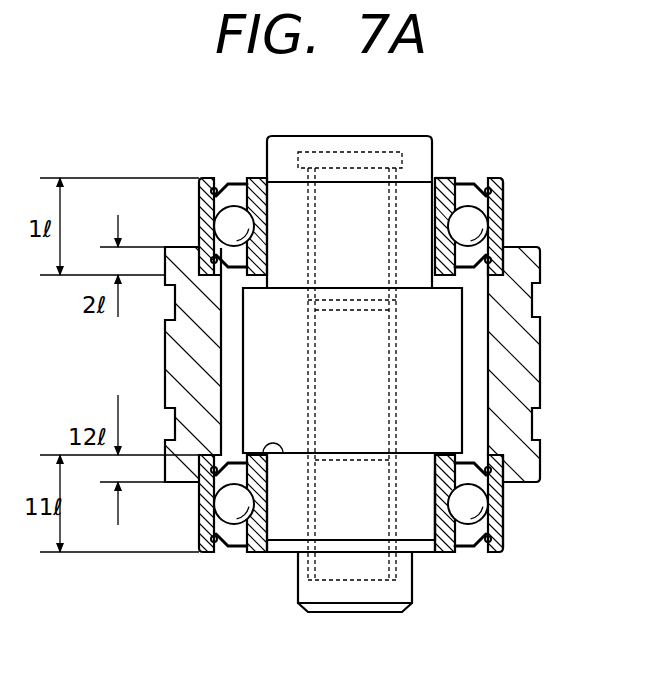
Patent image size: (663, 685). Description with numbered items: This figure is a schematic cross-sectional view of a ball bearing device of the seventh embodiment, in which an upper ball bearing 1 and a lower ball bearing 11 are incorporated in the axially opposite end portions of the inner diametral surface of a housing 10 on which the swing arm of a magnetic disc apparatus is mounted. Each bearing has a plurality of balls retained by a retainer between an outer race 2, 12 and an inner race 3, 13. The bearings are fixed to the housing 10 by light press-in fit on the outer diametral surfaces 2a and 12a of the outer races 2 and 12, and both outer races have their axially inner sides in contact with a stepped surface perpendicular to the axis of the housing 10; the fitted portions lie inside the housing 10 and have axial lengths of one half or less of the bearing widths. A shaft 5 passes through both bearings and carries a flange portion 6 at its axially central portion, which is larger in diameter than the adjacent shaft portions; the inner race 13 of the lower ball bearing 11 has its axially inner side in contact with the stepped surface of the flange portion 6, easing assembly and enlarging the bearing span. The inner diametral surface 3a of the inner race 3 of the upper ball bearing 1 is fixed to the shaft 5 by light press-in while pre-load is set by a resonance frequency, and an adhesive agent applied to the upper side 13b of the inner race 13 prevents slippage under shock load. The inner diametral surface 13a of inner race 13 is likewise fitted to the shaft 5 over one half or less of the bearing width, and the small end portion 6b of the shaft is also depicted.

The upper ball bearing 1 is at (391, 180).
The outer race 2 is at (395, 216).
The outer diametral surface 2a is at (505, 223).
The inner race 3 is at (376, 180).
The inner diametral surface 3a is at (447, 178).
The shaft 5 is at (433, 198).
The flange portion 6 is at (411, 360).
The small-diameter end portion of shaft 6b is at (413, 453).
The housing 10 is at (527, 271).
The lower ball bearing 11 is at (391, 536).
The outer race 12 is at (402, 503).
The outer diametral surface 12a is at (507, 505).
The inner race 13 is at (378, 536).
The inner diametral surface 13a is at (438, 520).
The upper side 13b is at (275, 453).